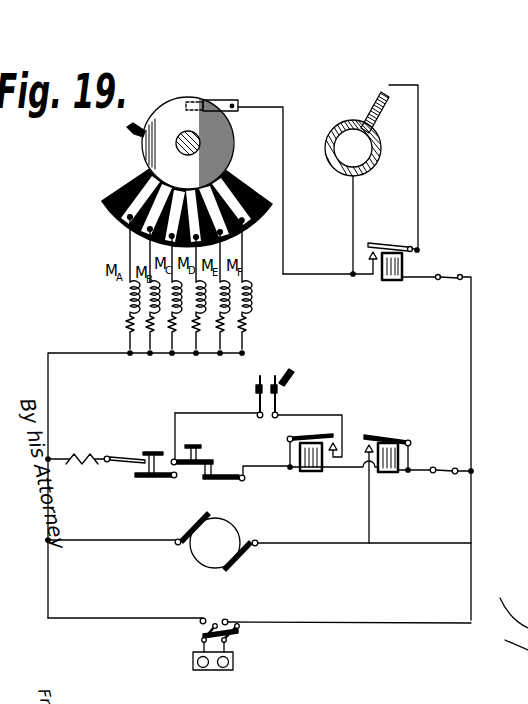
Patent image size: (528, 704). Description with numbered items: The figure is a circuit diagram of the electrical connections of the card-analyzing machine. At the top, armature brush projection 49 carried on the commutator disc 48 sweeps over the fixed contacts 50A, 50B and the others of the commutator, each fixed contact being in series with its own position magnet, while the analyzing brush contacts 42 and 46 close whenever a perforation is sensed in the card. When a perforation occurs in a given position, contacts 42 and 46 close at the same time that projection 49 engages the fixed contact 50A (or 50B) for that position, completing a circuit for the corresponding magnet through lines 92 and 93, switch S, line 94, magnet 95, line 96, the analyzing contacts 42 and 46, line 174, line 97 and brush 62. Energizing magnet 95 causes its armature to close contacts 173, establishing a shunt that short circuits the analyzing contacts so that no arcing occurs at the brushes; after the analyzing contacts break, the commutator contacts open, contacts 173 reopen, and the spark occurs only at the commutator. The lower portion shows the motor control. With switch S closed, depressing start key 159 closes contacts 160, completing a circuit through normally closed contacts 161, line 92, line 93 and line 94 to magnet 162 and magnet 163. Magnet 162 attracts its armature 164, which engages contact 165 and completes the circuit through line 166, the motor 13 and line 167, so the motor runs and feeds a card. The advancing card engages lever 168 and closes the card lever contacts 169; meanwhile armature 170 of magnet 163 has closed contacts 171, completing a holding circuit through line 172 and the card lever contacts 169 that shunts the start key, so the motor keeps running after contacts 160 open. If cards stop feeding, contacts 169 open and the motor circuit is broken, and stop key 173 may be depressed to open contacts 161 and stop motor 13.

The motor 13 is at (207, 551).
The analyzing brush contact 42 is at (374, 94).
The analyzing brush contact 46 is at (335, 130).
The disc 48 is at (182, 146).
The armature brush projection 49 is at (128, 128).
The fixed contact 50A is at (148, 176).
The fixed contact 50B is at (124, 222).
The brush 62 is at (236, 100).
The line 92 is at (48, 390).
The line 93 is at (160, 618).
The line 94 is at (471, 553).
The magnet 95 is at (398, 280).
The line 96 is at (418, 134).
The line 97 is at (283, 236).
The start key 159 is at (203, 446).
The contacts 160 is at (205, 470).
The normally closed contacts 161 is at (140, 465).
The magnet 162 is at (392, 473).
The magnet 163 is at (316, 456).
The armature 164 is at (384, 442).
The contact 165 is at (368, 455).
The line 166 is at (326, 543).
The line 167 is at (105, 535).
The lever 168 is at (292, 376).
The card lever contacts 169 is at (263, 376).
The armature 170 is at (326, 436).
The contacts 171 is at (332, 452).
The line 172 is at (392, 245).
The contacts 173 is at (372, 254).
The line 174 is at (353, 206).
The switch S is at (230, 633).